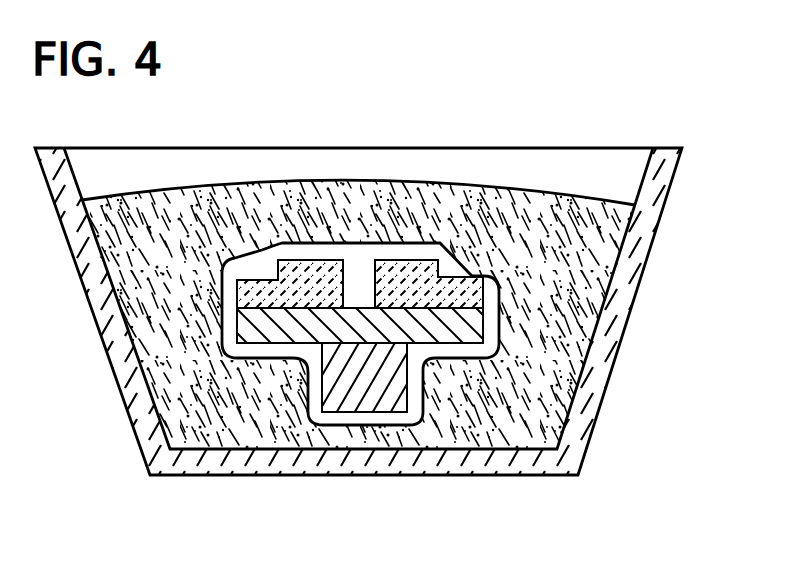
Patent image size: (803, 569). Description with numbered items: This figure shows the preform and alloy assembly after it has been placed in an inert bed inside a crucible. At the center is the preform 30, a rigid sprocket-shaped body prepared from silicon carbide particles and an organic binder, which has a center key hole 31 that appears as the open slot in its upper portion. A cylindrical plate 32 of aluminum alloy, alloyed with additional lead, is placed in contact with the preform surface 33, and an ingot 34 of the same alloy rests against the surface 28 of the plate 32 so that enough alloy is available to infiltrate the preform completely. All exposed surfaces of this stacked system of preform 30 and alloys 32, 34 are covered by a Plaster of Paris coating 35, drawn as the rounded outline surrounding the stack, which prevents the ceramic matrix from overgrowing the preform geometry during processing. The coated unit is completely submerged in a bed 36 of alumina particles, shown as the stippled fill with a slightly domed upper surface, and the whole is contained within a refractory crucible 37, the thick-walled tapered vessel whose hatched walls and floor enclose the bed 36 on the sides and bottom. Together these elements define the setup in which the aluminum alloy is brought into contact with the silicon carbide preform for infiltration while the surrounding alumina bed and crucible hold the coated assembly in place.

The surface 28 is at (466, 356).
The preform 30 is at (479, 272).
The center key hole 31 is at (375, 277).
The cylindrical plate 32 is at (451, 362).
The preform surface 33 is at (278, 323).
The ingot 34 is at (350, 391).
The Plaster of Paris coating 35 is at (250, 362).
The bed 36 is at (477, 200).
The refractory crucible 37 is at (664, 184).